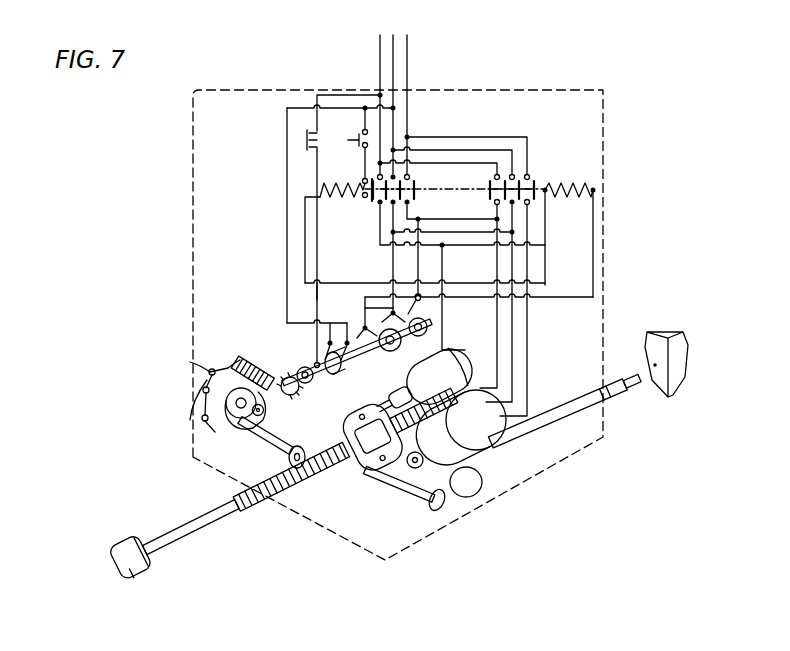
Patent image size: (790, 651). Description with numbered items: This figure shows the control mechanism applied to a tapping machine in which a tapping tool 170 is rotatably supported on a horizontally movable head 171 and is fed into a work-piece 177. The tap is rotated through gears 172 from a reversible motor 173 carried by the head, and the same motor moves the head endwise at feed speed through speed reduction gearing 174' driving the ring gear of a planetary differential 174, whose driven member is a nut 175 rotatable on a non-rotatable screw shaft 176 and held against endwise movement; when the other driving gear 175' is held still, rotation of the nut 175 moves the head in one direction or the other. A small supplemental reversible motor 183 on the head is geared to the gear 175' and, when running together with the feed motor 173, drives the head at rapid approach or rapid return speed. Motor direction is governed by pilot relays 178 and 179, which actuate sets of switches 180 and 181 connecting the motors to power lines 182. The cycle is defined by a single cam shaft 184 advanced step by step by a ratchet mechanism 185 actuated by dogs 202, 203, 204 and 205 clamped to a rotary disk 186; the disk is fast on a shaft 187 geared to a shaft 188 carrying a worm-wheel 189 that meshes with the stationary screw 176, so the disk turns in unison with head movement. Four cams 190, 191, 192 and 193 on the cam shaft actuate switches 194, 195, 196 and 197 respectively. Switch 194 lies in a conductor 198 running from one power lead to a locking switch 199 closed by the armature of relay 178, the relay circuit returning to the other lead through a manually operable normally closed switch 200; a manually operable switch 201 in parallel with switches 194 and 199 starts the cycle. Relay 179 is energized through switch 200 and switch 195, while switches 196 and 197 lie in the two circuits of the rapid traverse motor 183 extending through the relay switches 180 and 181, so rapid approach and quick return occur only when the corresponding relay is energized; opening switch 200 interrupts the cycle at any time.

The tapping tool 170 is at (640, 372).
The horizontally movable head 171 is at (585, 448).
The gears 172 is at (433, 442).
The reversible motor 173 is at (507, 442).
The planetary differential 174 is at (350, 437).
The speed reduction gearing 174' is at (387, 486).
The nut 175 is at (345, 449).
The driving gear 175' is at (390, 394).
The screw shaft 176 is at (226, 516).
The work-piece 177 is at (700, 318).
The pilot relay 178 is at (367, 210).
The pilot relay 179 is at (583, 186).
The set of switches 180 is at (365, 222).
The set of switches 181 is at (489, 216).
The power lines 182 is at (373, 49).
The supplemental reversible motor 183 is at (457, 376).
The cam shaft 184 is at (292, 395).
The ratchet mechanism 185 is at (278, 360).
The rotary disk 186 is at (252, 412).
The shaft 187 is at (236, 417).
The shaft 188 is at (268, 440).
The worm-wheel 189 is at (289, 461).
The cam 190 is at (370, 390).
The cam 191 is at (313, 378).
The cam 192 is at (402, 335).
The cam 193 is at (427, 322).
The switch 194 is at (328, 343).
The switch 195 is at (371, 330).
The switch 196 is at (380, 312).
The switch 197 is at (414, 305).
The conductor 198 is at (317, 300).
The switch 199 is at (364, 179).
The manually operable normally closed switch 200 is at (311, 143).
The manually operable switch 201 is at (362, 134).
The dog 202 is at (209, 373).
The dog 203 is at (203, 391).
The dog 204 is at (203, 417).
The dog 205 is at (228, 366).